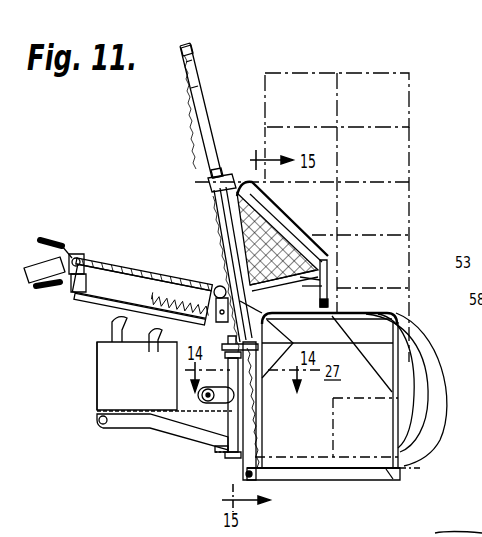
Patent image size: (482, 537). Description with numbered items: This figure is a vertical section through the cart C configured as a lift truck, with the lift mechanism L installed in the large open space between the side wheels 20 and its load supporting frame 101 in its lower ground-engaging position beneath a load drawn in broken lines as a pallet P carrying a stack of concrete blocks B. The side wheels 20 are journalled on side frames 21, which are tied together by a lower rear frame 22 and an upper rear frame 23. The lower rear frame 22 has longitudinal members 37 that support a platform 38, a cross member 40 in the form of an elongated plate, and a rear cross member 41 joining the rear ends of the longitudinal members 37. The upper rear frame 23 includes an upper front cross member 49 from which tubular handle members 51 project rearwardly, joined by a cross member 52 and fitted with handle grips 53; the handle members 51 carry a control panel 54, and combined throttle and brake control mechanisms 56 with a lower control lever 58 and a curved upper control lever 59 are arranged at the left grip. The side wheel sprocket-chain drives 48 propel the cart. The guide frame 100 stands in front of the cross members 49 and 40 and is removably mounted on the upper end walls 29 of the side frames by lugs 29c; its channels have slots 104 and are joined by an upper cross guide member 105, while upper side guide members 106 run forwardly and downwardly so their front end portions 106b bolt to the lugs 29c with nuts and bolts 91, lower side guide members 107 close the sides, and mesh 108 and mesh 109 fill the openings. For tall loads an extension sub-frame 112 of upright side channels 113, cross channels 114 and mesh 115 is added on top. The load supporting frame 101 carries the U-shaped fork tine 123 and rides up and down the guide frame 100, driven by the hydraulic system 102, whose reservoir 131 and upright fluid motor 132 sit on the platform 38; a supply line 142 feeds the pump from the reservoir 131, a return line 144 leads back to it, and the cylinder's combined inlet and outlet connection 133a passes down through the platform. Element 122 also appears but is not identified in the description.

The stack of concrete blocks B is at (412, 166).
The lift mechanism L is at (240, 166).
The cart C is at (135, 264).
The pallet P is at (406, 468).
The side wheels 20 is at (437, 392).
The side frames 21 is at (397, 421).
The lower rear frame 22 is at (397, 443).
The upper rear frame 23 is at (211, 285).
The upper end walls 29 is at (397, 318).
The lugs 29c is at (332, 285).
The longitudinal members 37 is at (170, 437).
The platform 38 is at (105, 410).
The cross member 40 is at (254, 426).
The rear cross member 41 is at (100, 426).
The side wheel sprocket-chain drives 48 is at (196, 396).
The upper front cross member 49 is at (219, 285).
The handle members 51 is at (150, 272).
The cross member 52 is at (80, 254).
The handle grips 53 is at (34, 264).
The control plate or panel 54 is at (114, 258).
The combined engine throttle and transmission brake control mechanisms 56 is at (106, 299).
The lower control lever 58 is at (72, 284).
The upper control lever 59 is at (68, 244).
The nuts and bolts 91 is at (329, 303).
The guide frame 100 is at (256, 301).
The load supporting frame 101 is at (256, 479).
The fluid operated system 102 is at (97, 352).
The slots 104 is at (213, 206).
The upper cross guide member 105 is at (208, 186).
The upper side guide plates or members 106 is at (276, 228).
The front end portions 106b is at (328, 278).
The lower side guide plates or members 107 is at (327, 262).
The mesh or screening 108 is at (292, 254).
The mesh or screening 109 is at (216, 222).
The extension or sub-frame 112 is at (206, 88).
The upright side channels 113 is at (195, 92).
The upper and lower cross channels 114 is at (187, 44).
The mesh or screening 115 is at (190, 70).
The frame member 122 is at (445, 532).
The load supporting fork member 123 is at (354, 482).
The reservoir or container 131 is at (97, 373).
The fluid motor 132 is at (245, 401).
The combined inlet and outlet terminal or connection 133a is at (226, 452).
The supply line 142 is at (156, 345).
The return line 144 is at (112, 328).